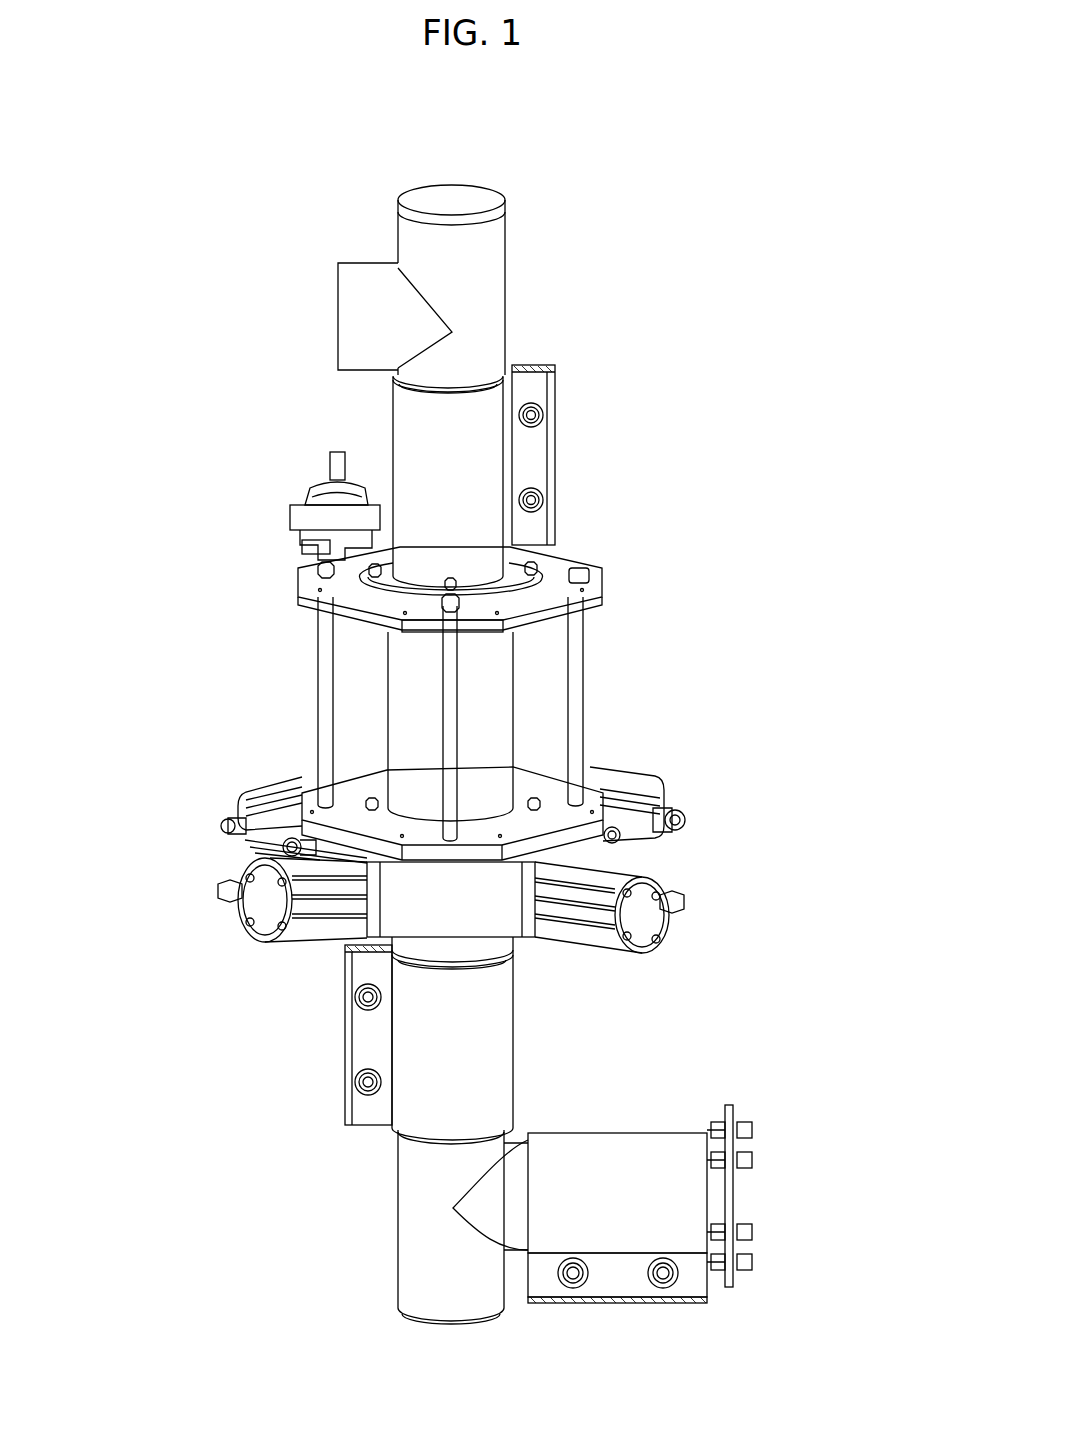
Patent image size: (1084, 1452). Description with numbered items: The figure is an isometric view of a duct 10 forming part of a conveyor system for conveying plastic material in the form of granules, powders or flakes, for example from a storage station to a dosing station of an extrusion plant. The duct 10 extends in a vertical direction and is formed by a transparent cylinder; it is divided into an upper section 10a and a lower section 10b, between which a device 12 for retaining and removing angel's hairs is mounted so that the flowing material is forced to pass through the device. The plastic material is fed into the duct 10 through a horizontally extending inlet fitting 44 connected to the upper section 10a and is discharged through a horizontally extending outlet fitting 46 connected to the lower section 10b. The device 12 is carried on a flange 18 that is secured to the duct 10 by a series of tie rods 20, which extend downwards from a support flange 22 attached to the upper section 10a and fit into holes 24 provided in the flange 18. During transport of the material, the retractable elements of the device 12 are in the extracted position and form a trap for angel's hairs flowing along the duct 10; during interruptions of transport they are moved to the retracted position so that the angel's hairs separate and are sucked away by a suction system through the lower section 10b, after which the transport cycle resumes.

The duct 10 is at (380, 733).
The upper section 10a is at (513, 700).
The lower section 10b is at (398, 1157).
The device for retaining and removing angel's hairs 12 is at (210, 905).
The flange 18 is at (525, 845).
The tie rods 20 is at (578, 757).
The support flange 22 is at (318, 760).
The holes 24 is at (593, 585).
The inlet fitting 44 is at (337, 316).
The outlet fitting 46 is at (512, 1252).